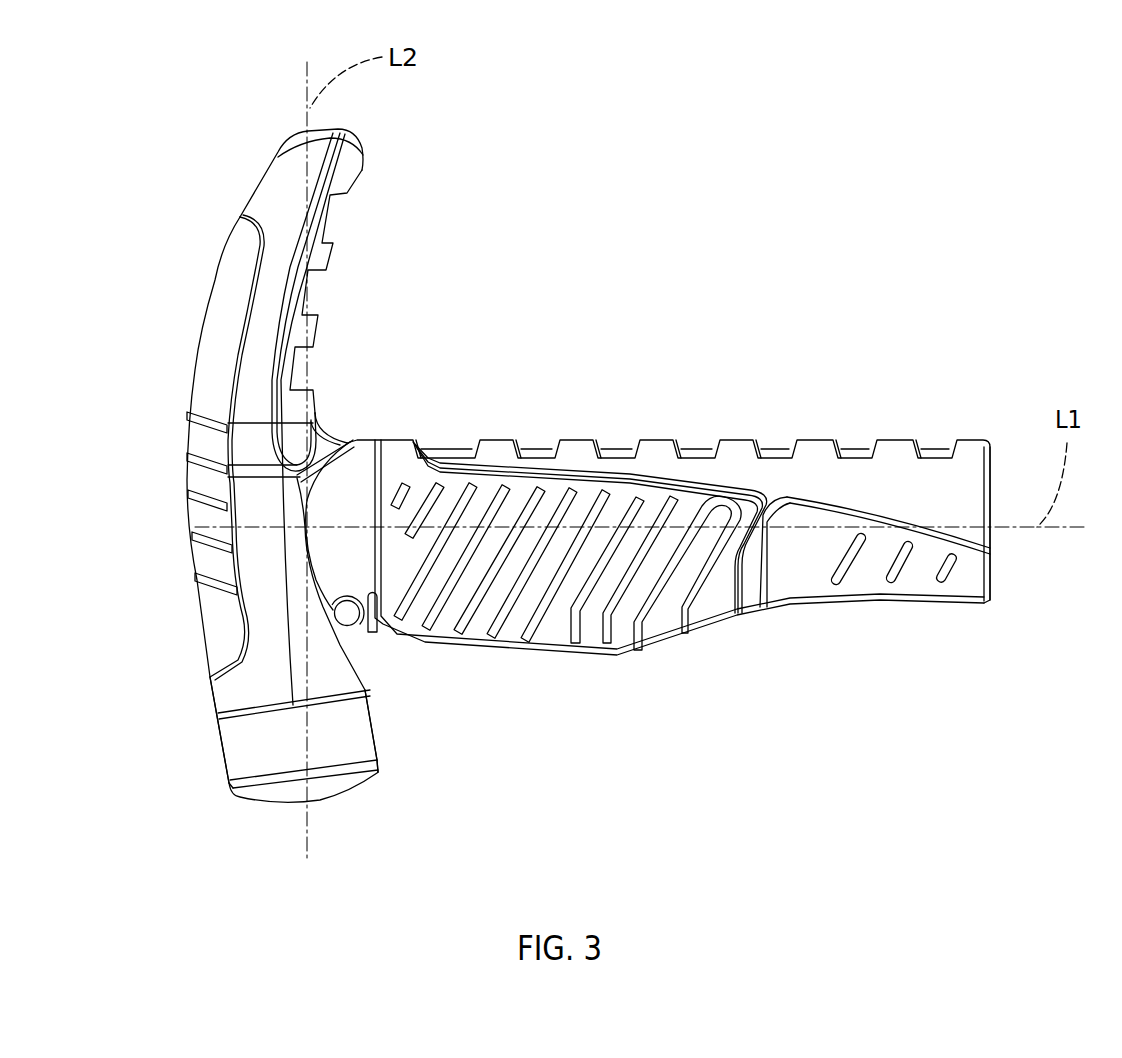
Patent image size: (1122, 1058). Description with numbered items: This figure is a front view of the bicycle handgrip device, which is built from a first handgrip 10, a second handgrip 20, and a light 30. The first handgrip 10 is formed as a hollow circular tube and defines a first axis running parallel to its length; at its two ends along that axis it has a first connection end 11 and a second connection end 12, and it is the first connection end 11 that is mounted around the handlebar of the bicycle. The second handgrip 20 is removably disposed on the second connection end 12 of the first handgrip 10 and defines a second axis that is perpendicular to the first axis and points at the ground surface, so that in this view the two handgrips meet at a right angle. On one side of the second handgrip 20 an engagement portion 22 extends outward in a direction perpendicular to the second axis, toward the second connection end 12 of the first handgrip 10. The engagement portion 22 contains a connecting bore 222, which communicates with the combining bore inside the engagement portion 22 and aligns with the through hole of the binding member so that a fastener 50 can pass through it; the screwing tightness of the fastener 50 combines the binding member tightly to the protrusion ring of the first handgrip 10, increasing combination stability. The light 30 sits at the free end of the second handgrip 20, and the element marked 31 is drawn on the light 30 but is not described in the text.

The first handgrip 10 is at (785, 436).
The first connection end 11 is at (993, 563).
The second connection end 12 is at (351, 628).
The second handgrip 20 is at (176, 468).
The engagement portion 22 is at (357, 490).
The connecting bore 222 is at (334, 603).
The light 30 is at (330, 802).
The end cap 31 is at (280, 795).
The fastener 50 is at (370, 647).